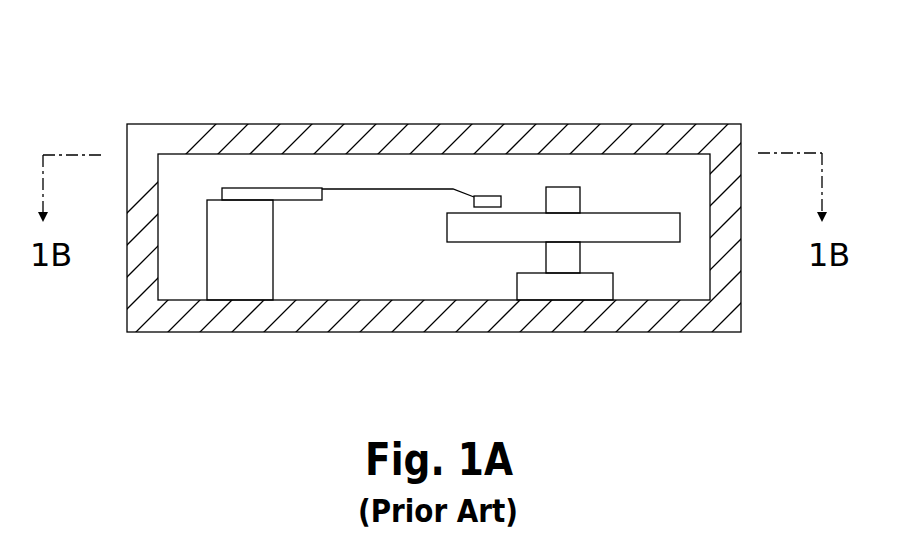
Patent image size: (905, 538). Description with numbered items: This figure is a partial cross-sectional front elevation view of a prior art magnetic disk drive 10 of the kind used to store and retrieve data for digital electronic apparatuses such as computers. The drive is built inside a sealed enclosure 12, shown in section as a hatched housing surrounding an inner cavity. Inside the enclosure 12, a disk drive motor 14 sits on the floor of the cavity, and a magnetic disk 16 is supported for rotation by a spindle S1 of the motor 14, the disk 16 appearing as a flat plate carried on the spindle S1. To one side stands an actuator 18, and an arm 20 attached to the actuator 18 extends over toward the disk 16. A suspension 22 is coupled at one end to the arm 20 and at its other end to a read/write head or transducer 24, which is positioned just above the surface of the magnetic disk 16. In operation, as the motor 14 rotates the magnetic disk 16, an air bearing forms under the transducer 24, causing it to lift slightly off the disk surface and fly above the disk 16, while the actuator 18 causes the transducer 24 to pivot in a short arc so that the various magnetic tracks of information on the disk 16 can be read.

The magnetic disk drive 10 is at (696, 68).
The sealed enclosure 12 is at (448, 323).
The disk drive motor 14 is at (588, 290).
The magnetic disk 16 is at (617, 218).
The actuator 18 is at (255, 263).
The arm 20 is at (283, 195).
The suspension 22 is at (390, 195).
The read/write head or transducer 24 is at (490, 198).
The spindle S1 is at (565, 193).